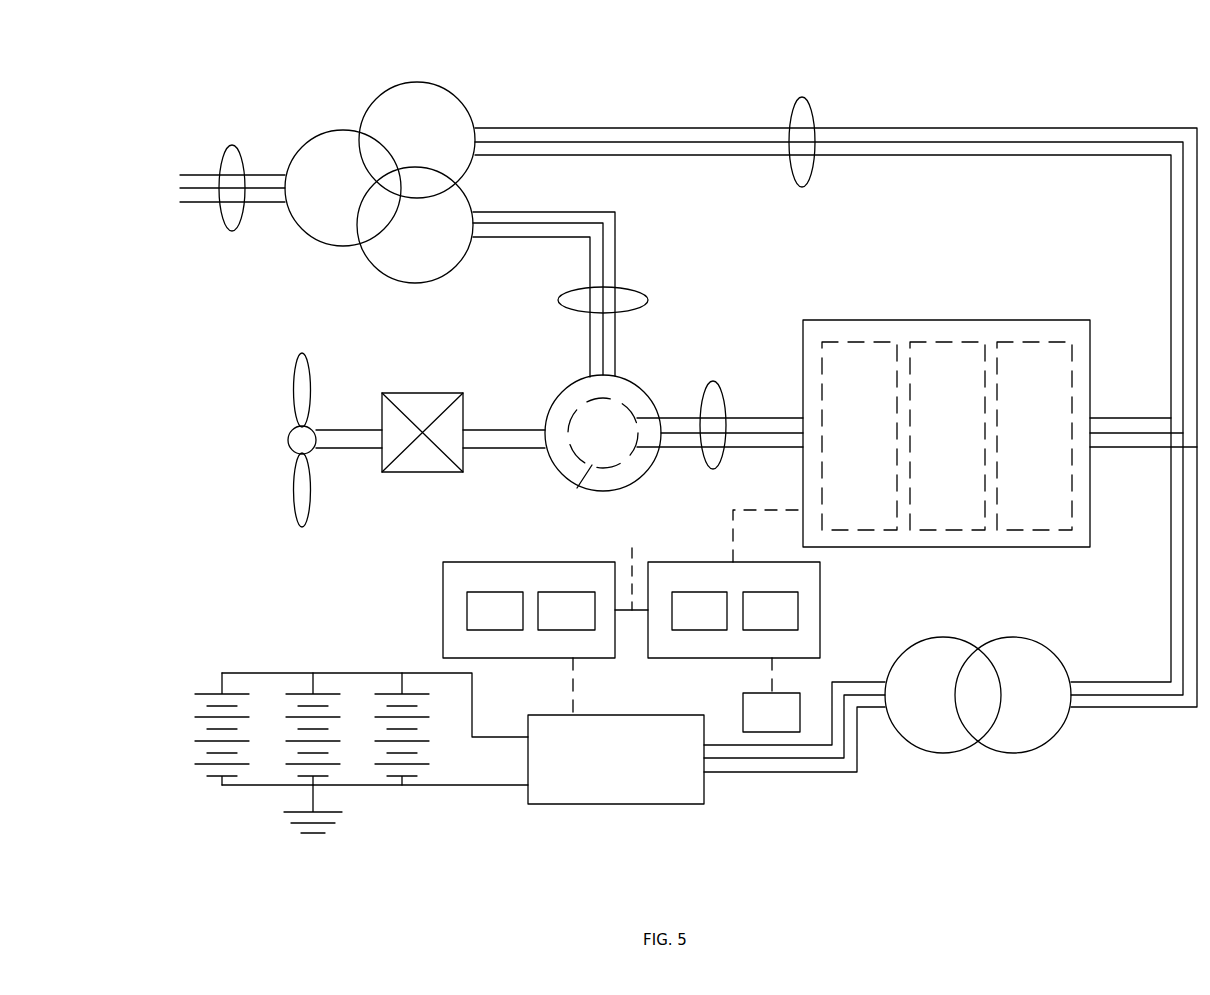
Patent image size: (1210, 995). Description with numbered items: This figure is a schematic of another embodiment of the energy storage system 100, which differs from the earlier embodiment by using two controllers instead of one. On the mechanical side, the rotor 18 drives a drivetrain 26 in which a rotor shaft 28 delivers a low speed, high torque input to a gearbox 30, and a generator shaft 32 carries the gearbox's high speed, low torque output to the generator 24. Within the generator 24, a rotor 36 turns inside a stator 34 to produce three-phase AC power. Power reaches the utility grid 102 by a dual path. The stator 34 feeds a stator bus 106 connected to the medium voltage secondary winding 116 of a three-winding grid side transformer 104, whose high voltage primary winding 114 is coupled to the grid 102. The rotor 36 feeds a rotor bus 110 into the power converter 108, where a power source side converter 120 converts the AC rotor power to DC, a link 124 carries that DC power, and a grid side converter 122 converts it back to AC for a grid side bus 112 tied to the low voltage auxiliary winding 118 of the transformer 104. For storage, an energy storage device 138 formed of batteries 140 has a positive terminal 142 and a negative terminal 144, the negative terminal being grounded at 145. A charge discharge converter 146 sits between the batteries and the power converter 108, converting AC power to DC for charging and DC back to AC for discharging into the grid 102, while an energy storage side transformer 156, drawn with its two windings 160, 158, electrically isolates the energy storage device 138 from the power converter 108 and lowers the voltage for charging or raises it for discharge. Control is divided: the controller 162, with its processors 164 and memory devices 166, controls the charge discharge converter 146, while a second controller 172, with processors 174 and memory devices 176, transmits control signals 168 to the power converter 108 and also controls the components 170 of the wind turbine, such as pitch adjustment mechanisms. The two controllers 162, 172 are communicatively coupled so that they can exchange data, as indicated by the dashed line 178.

The energy storage system 100 is at (140, 102).
The utility grid 102 is at (238, 148).
The grid side transformer 104 is at (353, 114).
The stator bus 106 is at (650, 300).
The power converter 108 is at (803, 348).
The rotor bus 110 is at (716, 385).
The grid side bus 112 is at (812, 112).
The primary winding 114 is at (335, 247).
The secondary winding 116 is at (450, 273).
The auxiliary winding 118 is at (467, 107).
The power source side converter 120 is at (862, 342).
The grid side converter 122 is at (1030, 342).
The link 124 is at (946, 342).
The rotor 18 is at (288, 497).
The generator 24 is at (641, 389).
The drivetrain 26 is at (422, 382).
The rotor shaft 28 is at (340, 450).
The gearbox 30 is at (415, 472).
The generator shaft 32 is at (500, 430).
The stator 34 is at (560, 390).
The rotor 36 is at (572, 495).
The energy storage device 138 is at (259, 673).
The batteries 140 is at (342, 673).
The positive terminal 142 is at (433, 673).
The negative terminal 144 is at (450, 785).
The ground 145 is at (309, 847).
The charge discharge converter 146 is at (630, 805).
The energy storage side transformer 156 is at (987, 643).
The transformer winding 158 is at (1032, 752).
The transformer winding 160 is at (925, 640).
The controller 162 is at (443, 612).
The processors 164 is at (495, 611).
The memory devices 166 is at (566, 611).
The control signals 168 is at (733, 532).
The components of the wind turbine 170 is at (771, 712).
The controller 172 is at (820, 607).
The processors 174 is at (699, 611).
The memory devices 176 is at (770, 611).
The data transmission link 178 is at (632, 548).